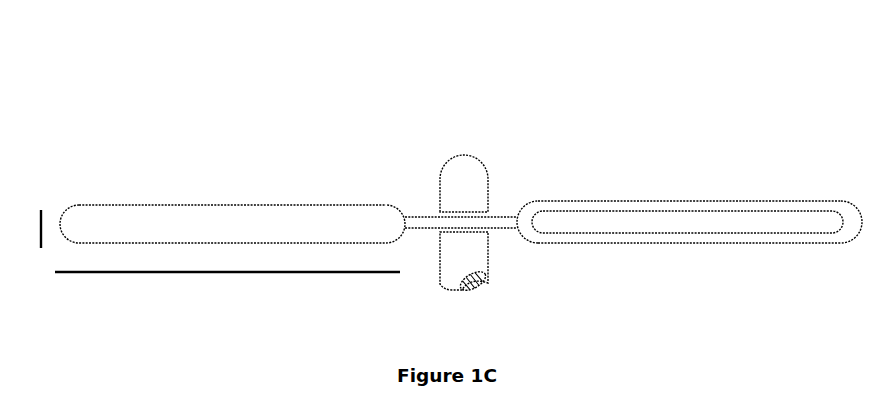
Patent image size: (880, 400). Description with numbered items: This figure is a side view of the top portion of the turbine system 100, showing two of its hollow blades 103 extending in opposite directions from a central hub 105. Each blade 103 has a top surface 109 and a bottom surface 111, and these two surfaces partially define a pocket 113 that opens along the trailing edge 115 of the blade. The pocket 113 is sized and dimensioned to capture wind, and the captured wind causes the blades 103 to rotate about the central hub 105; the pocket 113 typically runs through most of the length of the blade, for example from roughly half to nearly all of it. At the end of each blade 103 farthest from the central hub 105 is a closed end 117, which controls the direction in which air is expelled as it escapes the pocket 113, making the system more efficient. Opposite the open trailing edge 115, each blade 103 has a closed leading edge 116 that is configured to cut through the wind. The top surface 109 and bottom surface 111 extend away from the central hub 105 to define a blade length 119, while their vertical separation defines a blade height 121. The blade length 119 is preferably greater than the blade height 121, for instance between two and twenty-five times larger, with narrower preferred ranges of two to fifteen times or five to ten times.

The turbine system 100 is at (132, 100).
The blades 103 is at (255, 207).
The central hub 105 is at (443, 182).
The top surface 109 is at (647, 203).
The bottom surface 111 is at (574, 243).
The pocket 113 is at (637, 217).
The trailing edge 115 is at (736, 228).
The closed leading edge 116 is at (310, 211).
The closed end 117 is at (862, 208).
The blade length 119 is at (227, 299).
The blade height 121 is at (38, 231).